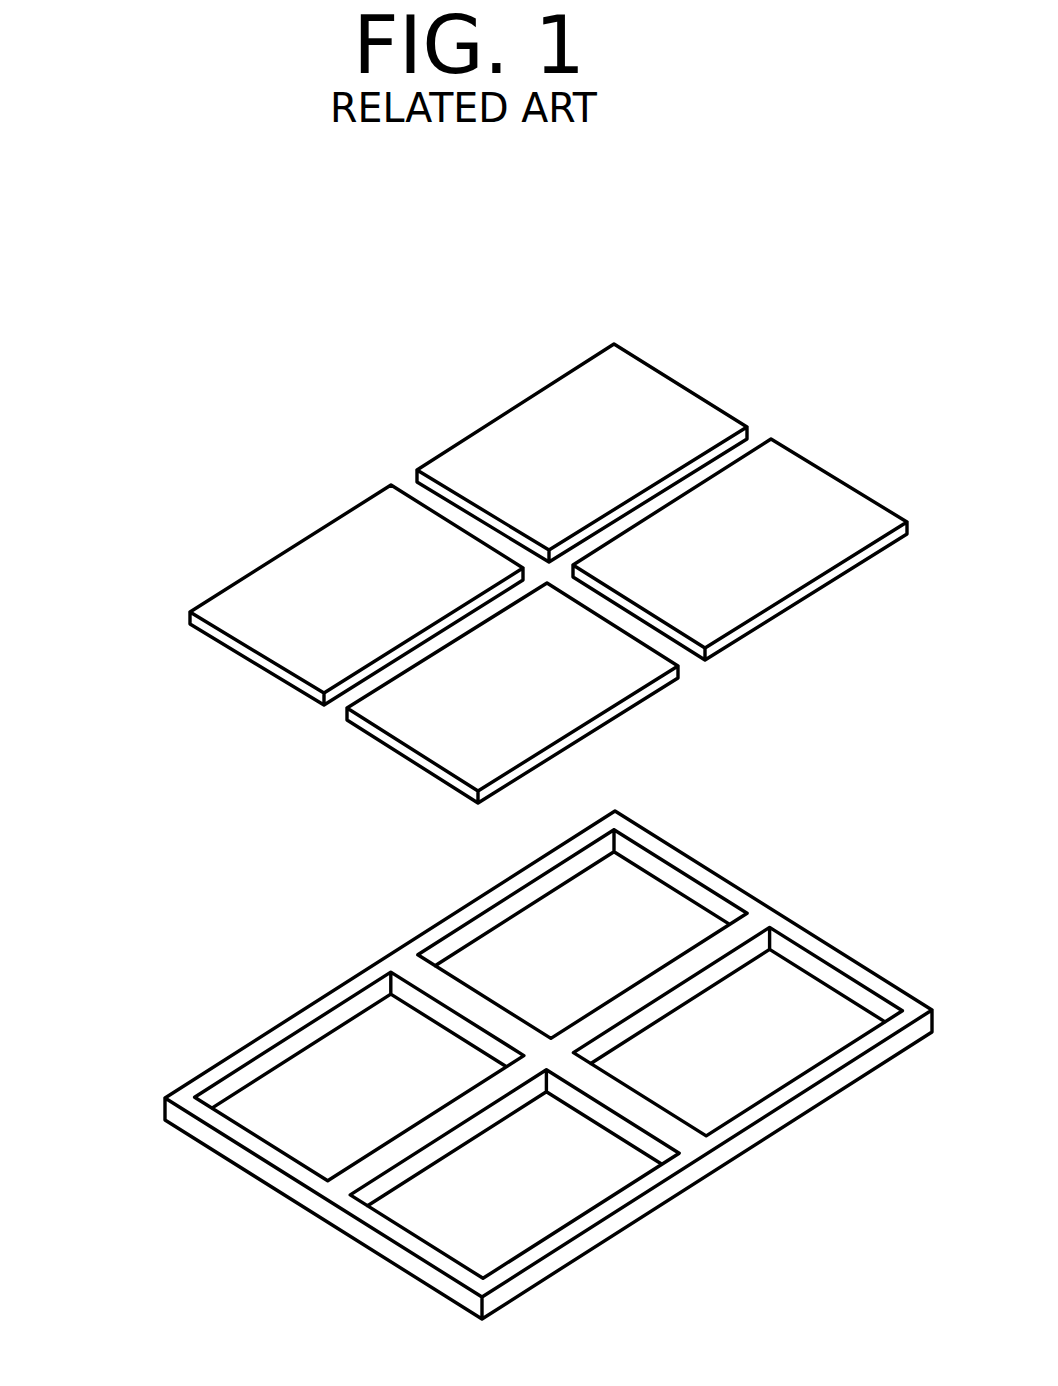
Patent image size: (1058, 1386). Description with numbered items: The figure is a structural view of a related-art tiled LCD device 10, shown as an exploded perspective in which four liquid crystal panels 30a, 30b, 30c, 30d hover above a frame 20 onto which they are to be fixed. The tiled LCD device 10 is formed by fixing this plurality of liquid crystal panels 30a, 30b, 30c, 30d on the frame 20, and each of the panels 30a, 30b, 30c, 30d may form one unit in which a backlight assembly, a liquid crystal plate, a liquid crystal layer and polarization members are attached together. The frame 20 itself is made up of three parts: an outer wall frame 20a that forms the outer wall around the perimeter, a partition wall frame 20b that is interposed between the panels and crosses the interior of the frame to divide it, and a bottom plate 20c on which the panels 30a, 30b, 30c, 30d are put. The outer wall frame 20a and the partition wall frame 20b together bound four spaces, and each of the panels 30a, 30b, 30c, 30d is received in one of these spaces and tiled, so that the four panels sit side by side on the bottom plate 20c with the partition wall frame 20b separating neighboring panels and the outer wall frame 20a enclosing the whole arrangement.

The tiled LCD device 10 is at (150, 865).
The frame 20 is at (800, 900).
The outer wall frame 20a is at (577, 1227).
The partition wall frame 20b is at (645, 1115).
The bottom plate 20c is at (450, 1225).
The liquid crystal panel 30a is at (555, 402).
The liquid crystal panel 30b is at (790, 566).
The liquid crystal panel 30c is at (408, 724).
The liquid crystal panel 30d is at (332, 543).